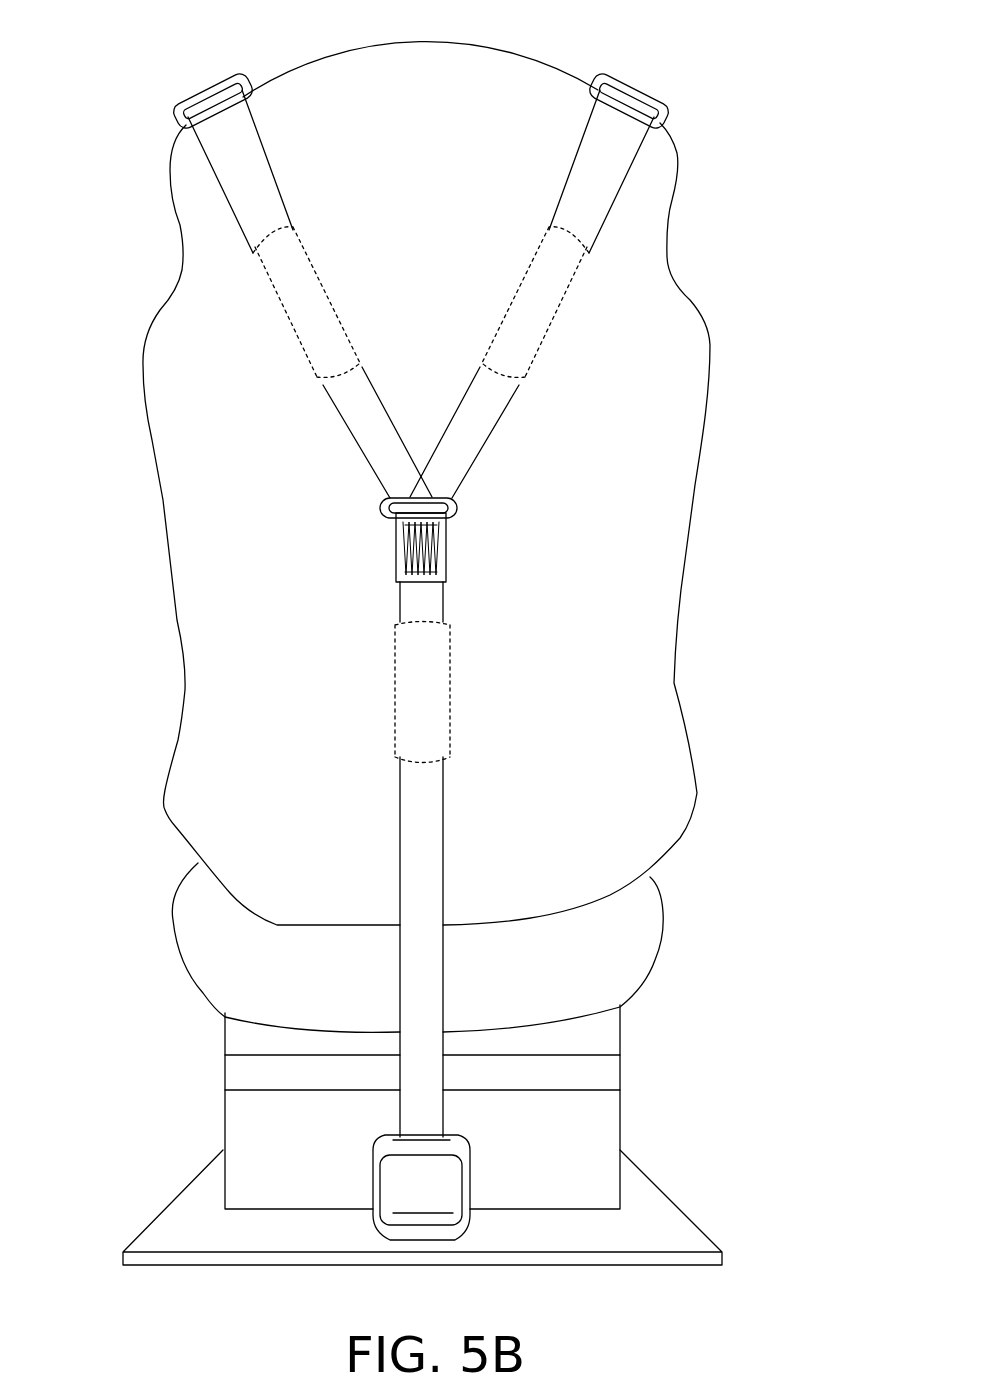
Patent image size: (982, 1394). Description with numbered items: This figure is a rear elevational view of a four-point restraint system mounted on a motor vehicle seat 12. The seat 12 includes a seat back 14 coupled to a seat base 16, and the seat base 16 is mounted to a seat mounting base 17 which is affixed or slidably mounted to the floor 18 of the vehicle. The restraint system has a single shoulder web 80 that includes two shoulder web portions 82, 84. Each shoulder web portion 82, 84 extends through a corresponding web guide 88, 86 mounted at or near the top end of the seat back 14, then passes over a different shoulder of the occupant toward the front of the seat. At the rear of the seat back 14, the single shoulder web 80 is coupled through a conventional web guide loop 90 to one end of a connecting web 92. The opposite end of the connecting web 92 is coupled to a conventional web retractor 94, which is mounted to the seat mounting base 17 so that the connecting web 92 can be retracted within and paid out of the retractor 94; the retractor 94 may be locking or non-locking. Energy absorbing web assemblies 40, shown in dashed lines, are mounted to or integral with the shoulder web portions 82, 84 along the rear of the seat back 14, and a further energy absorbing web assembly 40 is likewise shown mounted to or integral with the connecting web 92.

The motor vehicle seat 12 is at (690, 562).
The seat back 14 is at (698, 478).
The seat base 16 is at (663, 937).
The seat mounting base 17 is at (622, 1122).
The floor 18 is at (155, 1218).
The energy absorbing web assembly 40 is at (276, 322).
The shoulder web 80 is at (272, 148).
The shoulder web portion 82 is at (588, 156).
The shoulder web portion 84 is at (258, 176).
The web guide 86 is at (200, 88).
The web guide 88 is at (643, 80).
The web guide loop 90 is at (457, 508).
The connecting web 92 is at (445, 845).
The web retractor 94 is at (472, 1176).